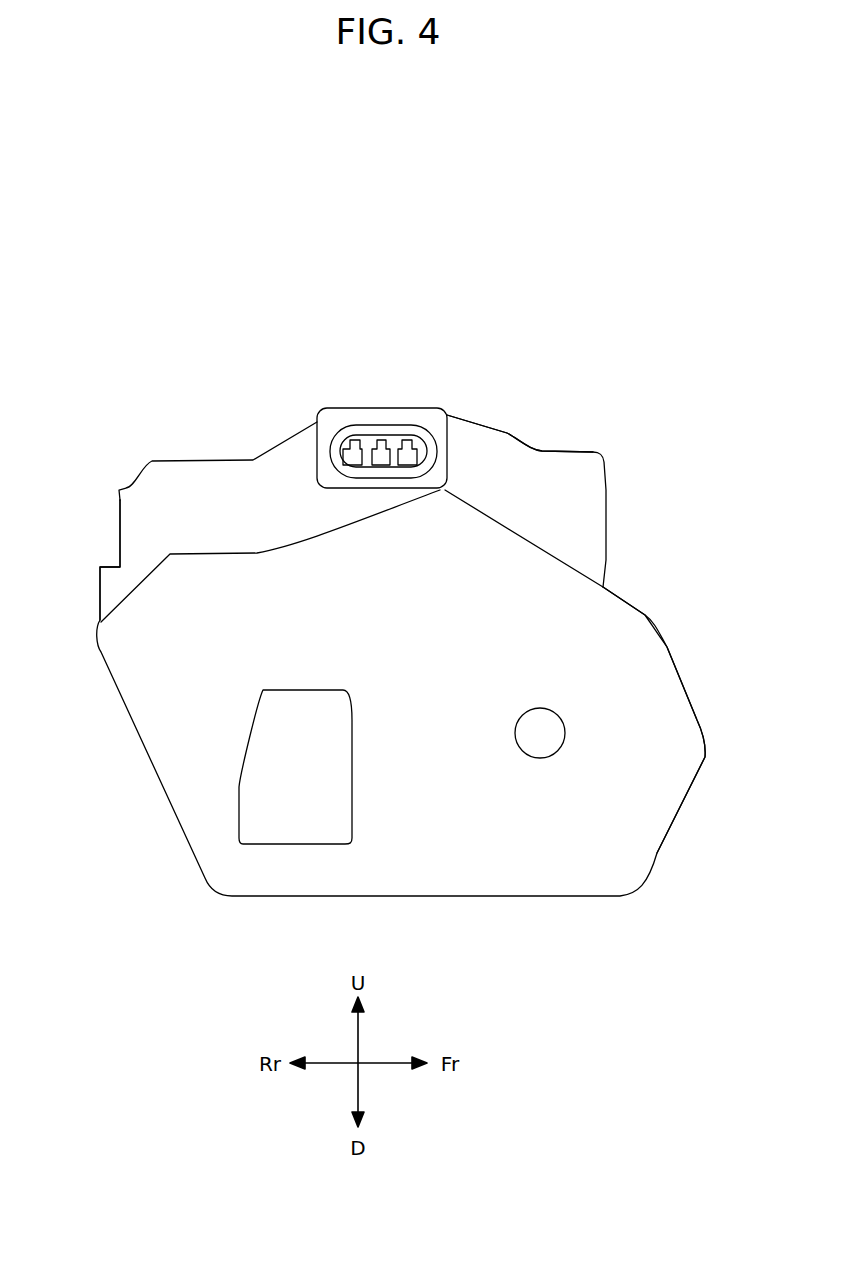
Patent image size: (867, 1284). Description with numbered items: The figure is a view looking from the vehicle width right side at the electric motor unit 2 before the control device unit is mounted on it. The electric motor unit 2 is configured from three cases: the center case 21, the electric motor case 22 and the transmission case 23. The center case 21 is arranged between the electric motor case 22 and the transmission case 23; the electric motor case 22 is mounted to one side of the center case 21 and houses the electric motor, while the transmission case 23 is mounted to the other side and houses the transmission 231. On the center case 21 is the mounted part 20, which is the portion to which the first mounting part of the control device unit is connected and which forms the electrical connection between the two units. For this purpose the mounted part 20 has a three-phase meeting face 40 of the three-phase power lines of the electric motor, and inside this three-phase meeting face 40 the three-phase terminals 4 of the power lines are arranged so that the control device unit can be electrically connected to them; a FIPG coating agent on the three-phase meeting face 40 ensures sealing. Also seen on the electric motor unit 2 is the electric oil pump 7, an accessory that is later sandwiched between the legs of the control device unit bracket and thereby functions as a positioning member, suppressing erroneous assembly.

The electric motor unit 2 is at (505, 302).
The three-phase terminals 4 is at (348, 453).
The electric oil pump 7 is at (268, 812).
The mounted part 20 is at (360, 418).
The center case 21 is at (447, 412).
The electric motor case 22 is at (118, 497).
The transmission case 23 is at (613, 620).
The three-phase meeting face 40 is at (383, 418).
The transmission 231 is at (495, 798).